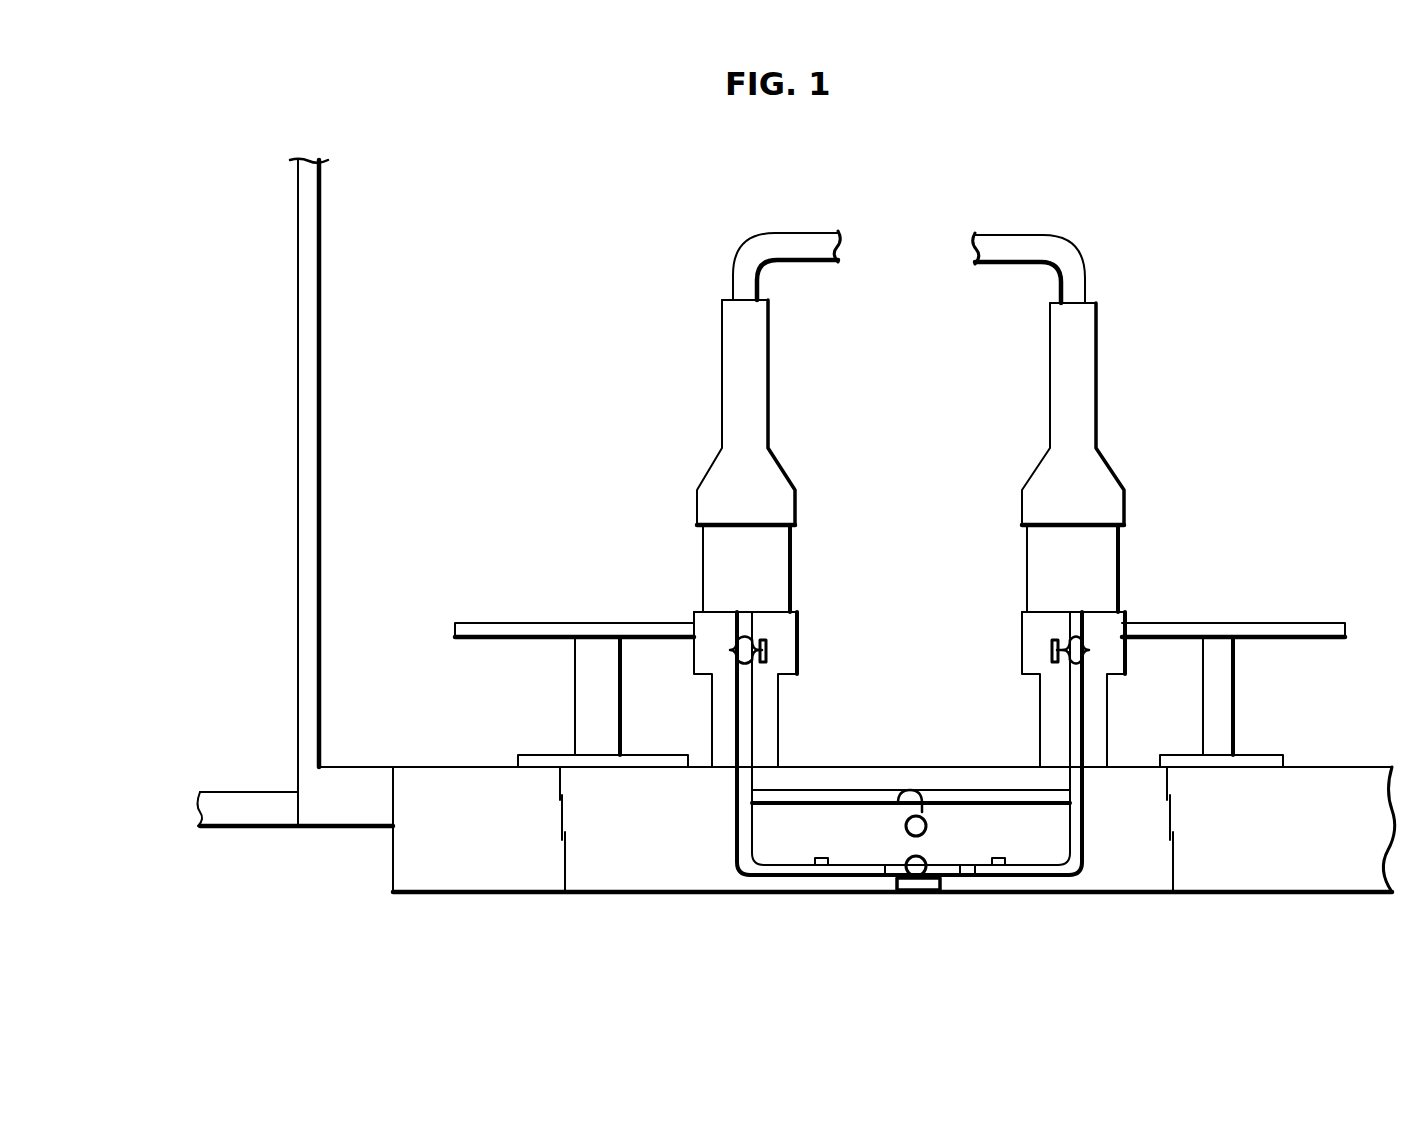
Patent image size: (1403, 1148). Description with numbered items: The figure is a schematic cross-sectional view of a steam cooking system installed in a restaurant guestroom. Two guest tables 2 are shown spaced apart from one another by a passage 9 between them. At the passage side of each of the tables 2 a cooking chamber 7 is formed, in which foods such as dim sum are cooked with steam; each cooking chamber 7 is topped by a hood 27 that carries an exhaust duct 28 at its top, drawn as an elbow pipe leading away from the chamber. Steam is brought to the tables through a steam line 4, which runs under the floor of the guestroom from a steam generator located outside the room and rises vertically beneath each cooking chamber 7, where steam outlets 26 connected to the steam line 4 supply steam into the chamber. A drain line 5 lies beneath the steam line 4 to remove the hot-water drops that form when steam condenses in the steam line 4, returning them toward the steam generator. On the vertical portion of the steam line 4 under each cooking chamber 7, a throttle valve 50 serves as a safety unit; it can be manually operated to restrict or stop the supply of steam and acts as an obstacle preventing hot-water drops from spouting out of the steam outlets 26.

The guest table 2 is at (487, 622).
The steam line 4 is at (752, 720).
The drain line 5 is at (1037, 872).
The cooking chamber 7 is at (765, 577).
The passage 9 is at (1000, 765).
The steam outlet 26 is at (743, 605).
The hood 27 is at (773, 481).
The exhaust duct 28 is at (806, 240).
The throttle valve 50 is at (768, 642).